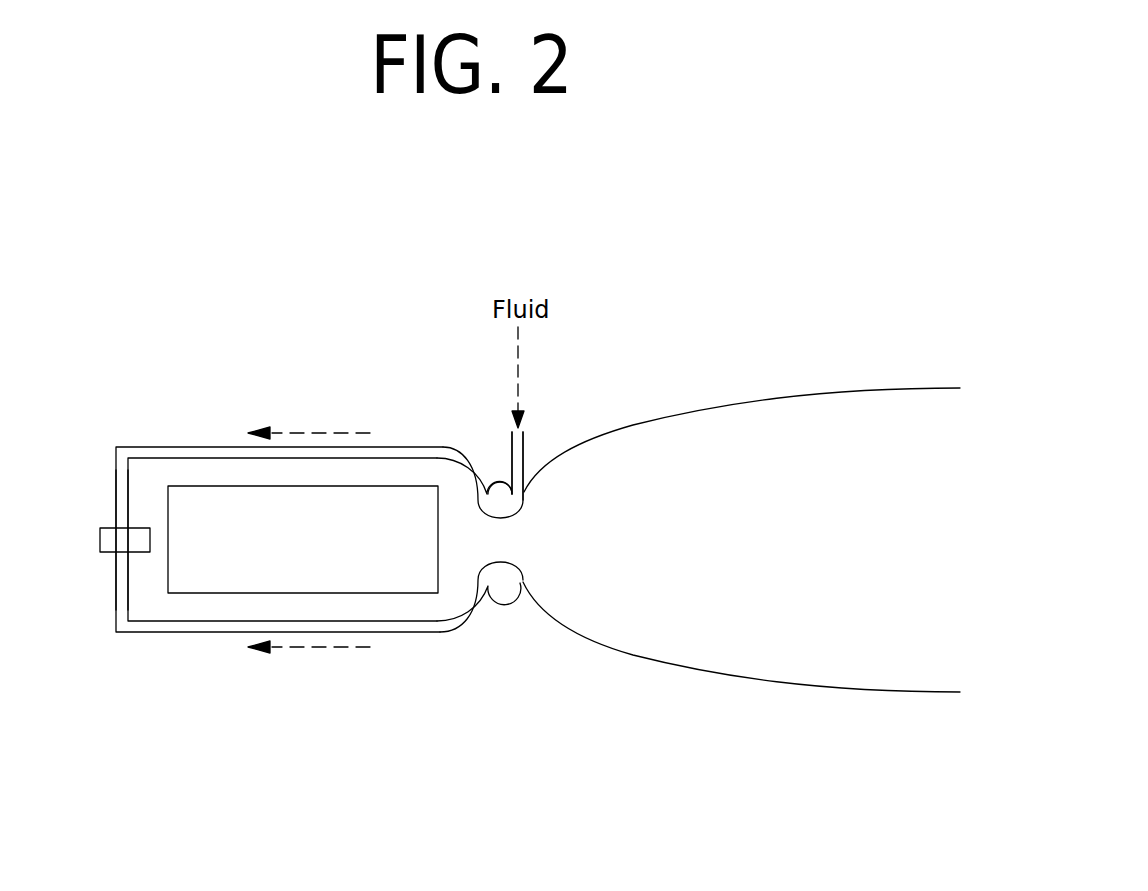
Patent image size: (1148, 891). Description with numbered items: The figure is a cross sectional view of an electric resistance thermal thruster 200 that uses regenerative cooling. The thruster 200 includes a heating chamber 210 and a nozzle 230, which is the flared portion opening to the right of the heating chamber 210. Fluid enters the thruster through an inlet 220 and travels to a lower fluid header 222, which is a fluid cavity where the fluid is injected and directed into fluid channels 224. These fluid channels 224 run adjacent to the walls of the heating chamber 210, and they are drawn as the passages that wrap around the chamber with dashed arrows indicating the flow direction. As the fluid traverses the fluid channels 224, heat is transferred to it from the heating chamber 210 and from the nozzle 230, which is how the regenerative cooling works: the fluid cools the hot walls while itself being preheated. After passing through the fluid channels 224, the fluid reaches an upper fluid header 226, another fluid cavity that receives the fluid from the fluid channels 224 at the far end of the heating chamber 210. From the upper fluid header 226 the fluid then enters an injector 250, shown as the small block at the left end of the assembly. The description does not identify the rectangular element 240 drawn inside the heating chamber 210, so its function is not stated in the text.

The electric resistance thermal thruster 200 is at (152, 171).
The heating chamber 210 is at (190, 633).
The inlet 220 is at (525, 455).
The lower fluid header 222 is at (498, 482).
The fluid channels 224 is at (197, 453).
The upper fluid header 226 is at (125, 492).
The nozzle 230 is at (748, 402).
The internal component 240 is at (440, 487).
The injector 250 is at (102, 555).